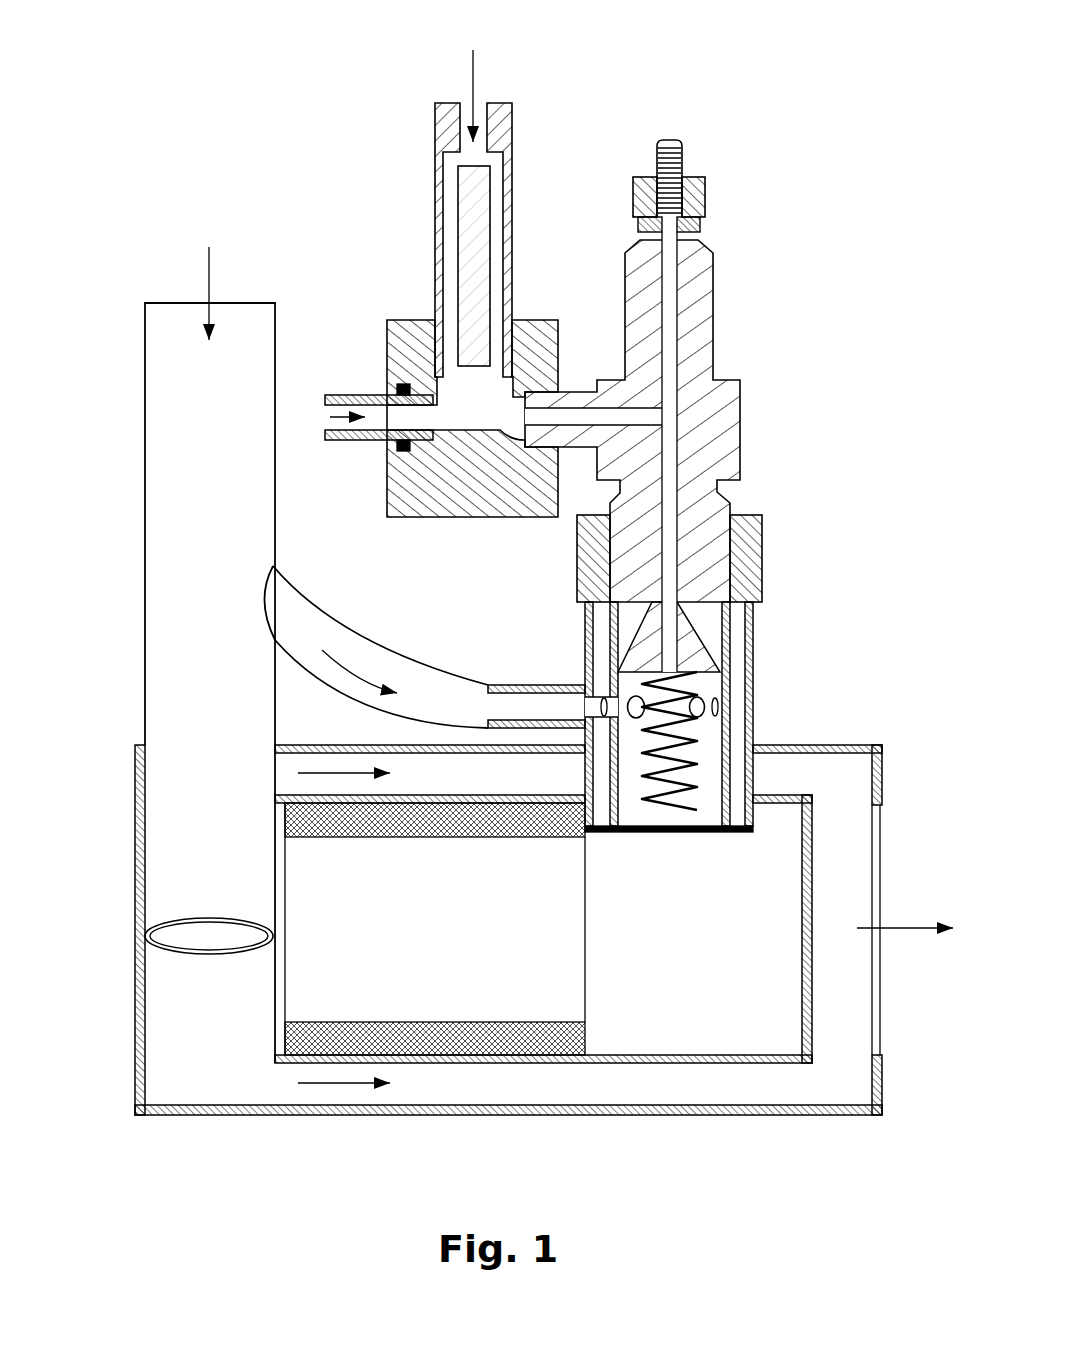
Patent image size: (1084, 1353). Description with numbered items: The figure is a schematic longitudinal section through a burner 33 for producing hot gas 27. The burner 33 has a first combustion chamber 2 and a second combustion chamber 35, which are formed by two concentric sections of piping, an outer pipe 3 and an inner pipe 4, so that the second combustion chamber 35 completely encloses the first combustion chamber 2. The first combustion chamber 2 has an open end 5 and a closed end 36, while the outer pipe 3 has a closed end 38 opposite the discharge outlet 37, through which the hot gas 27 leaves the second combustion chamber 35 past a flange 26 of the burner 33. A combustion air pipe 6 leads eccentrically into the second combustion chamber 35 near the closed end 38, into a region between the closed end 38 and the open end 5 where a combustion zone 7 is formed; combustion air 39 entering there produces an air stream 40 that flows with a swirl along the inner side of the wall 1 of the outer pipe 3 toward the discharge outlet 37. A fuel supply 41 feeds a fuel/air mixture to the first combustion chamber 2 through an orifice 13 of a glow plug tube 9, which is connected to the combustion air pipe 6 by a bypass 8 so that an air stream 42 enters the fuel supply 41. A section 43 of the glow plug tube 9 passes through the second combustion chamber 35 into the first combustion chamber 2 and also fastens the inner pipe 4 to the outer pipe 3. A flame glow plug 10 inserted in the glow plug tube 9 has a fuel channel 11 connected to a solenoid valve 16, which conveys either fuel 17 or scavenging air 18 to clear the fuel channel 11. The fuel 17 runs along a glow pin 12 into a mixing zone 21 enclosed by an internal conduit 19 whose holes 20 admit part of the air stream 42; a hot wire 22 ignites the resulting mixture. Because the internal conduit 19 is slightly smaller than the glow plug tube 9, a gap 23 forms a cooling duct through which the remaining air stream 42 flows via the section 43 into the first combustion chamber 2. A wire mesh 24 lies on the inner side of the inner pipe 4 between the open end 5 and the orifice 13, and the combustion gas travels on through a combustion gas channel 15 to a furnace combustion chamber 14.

The wall 1 is at (432, 1115).
The first combustion chamber 2 is at (677, 1030).
The outer pipe 3 is at (200, 1113).
The inner pipe 4 is at (790, 1067).
The open end 5 is at (282, 977).
The combustion air pipe 6 is at (157, 527).
The combustion zone 7 is at (205, 1005).
The bypass 8 is at (308, 627).
The glow plug tube 9 is at (752, 630).
The flame glow plug 10 is at (735, 403).
The fuel channel 11 is at (683, 448).
The glow pin 12 is at (672, 503).
The orifice 13 is at (700, 833).
The furnace combustion chamber 14 is at (725, 997).
The combustion gas channel 15 is at (588, 1088).
The solenoid valve 16 is at (467, 243).
The fuel 17 is at (475, 80).
The scavenging air 18 is at (312, 407).
The internal conduit 19 is at (722, 728).
The holes 20 is at (705, 692).
The mixing zone 21 is at (643, 680).
The hot wire 22 is at (650, 810).
The gap 23 is at (600, 800).
The wire mesh 24 is at (548, 1030).
The flange 26 is at (882, 1085).
The hot gas 27 is at (890, 928).
The burner 33 is at (252, 190).
The second combustion chamber 35 is at (518, 789).
The closed end 36 is at (805, 988).
The discharge outlet 37 is at (878, 975).
The closed end 38 is at (133, 963).
The combustion air 39 is at (211, 280).
The air stream 40 is at (318, 760).
The fuel supply 41 is at (788, 210).
The air stream 42 is at (348, 657).
The section 43 is at (780, 757).